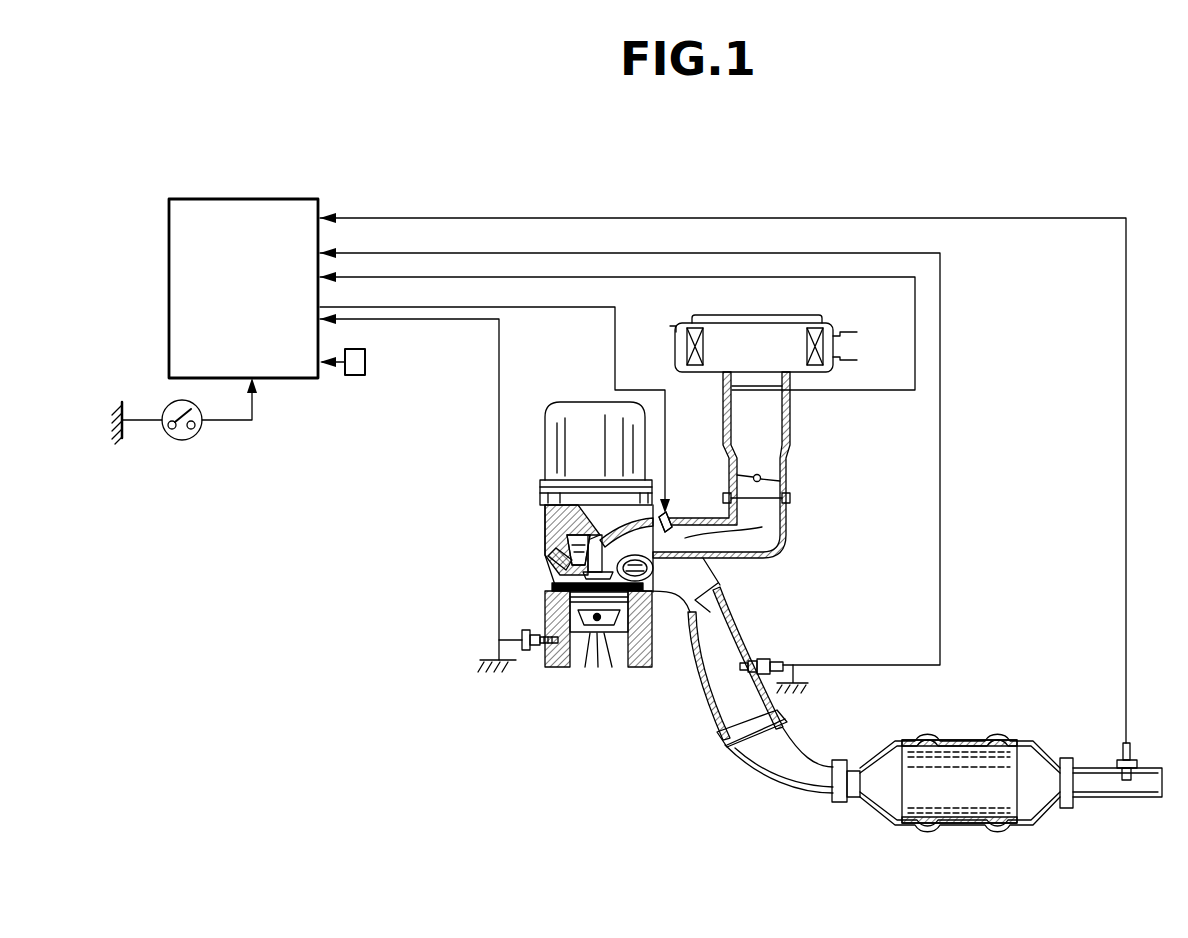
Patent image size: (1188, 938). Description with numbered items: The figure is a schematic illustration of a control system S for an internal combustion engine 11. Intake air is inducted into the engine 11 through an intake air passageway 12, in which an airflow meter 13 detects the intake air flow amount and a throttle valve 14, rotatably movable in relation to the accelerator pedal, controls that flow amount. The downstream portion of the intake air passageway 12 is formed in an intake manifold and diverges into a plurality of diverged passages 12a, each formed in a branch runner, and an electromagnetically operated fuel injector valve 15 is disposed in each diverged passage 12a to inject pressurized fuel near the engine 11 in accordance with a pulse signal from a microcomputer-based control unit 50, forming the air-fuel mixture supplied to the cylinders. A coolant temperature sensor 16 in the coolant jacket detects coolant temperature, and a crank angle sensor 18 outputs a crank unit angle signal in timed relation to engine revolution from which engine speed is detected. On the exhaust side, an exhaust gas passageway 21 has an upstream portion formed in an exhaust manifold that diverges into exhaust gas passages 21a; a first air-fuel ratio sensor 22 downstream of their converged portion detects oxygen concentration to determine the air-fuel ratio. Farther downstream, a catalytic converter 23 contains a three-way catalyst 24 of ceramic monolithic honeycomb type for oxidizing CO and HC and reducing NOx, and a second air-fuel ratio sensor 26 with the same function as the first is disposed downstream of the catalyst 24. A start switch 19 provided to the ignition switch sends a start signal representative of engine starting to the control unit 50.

The control system S is at (720, 196).
The control unit 50 is at (312, 199).
The internal combustion engine 11 is at (573, 410).
The intake air passageway 12 is at (763, 547).
The diverged passage 12a is at (762, 527).
The airflow meter 13 is at (767, 397).
The throttle valve 14 is at (772, 478).
The fuel injector valve 15 is at (668, 513).
The coolant temperature sensor 16 is at (533, 652).
The crank angle sensor 18 is at (355, 376).
The start switch 19 is at (182, 440).
The exhaust gas passageway 21 is at (700, 698).
The exhaust gas passage 21a is at (680, 588).
The first air-fuel ratio sensor 22 is at (763, 660).
The catalytic converter 23 is at (983, 716).
The three-way catalyst 24 is at (978, 810).
The second air-fuel ratio sensor 26 is at (1130, 753).